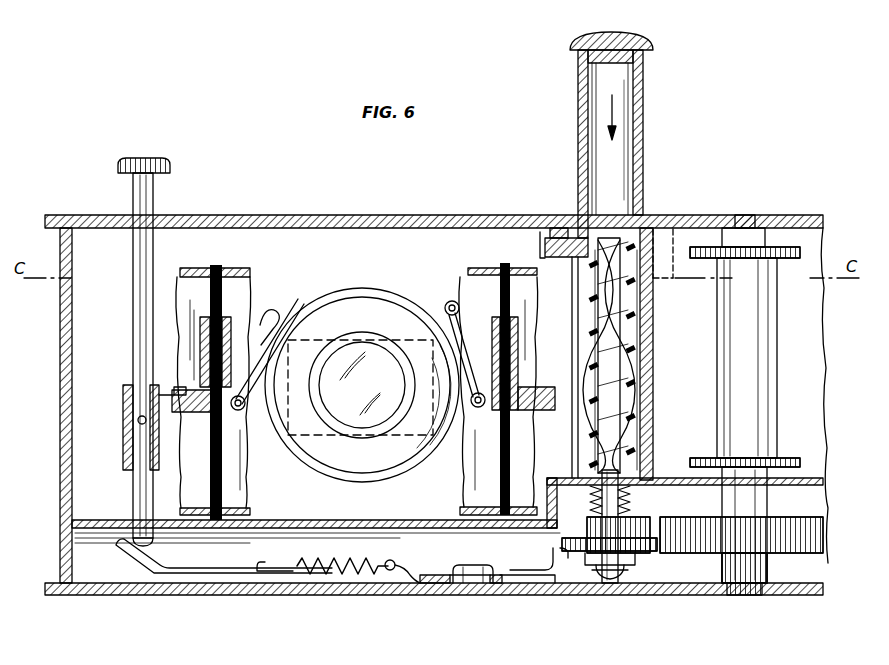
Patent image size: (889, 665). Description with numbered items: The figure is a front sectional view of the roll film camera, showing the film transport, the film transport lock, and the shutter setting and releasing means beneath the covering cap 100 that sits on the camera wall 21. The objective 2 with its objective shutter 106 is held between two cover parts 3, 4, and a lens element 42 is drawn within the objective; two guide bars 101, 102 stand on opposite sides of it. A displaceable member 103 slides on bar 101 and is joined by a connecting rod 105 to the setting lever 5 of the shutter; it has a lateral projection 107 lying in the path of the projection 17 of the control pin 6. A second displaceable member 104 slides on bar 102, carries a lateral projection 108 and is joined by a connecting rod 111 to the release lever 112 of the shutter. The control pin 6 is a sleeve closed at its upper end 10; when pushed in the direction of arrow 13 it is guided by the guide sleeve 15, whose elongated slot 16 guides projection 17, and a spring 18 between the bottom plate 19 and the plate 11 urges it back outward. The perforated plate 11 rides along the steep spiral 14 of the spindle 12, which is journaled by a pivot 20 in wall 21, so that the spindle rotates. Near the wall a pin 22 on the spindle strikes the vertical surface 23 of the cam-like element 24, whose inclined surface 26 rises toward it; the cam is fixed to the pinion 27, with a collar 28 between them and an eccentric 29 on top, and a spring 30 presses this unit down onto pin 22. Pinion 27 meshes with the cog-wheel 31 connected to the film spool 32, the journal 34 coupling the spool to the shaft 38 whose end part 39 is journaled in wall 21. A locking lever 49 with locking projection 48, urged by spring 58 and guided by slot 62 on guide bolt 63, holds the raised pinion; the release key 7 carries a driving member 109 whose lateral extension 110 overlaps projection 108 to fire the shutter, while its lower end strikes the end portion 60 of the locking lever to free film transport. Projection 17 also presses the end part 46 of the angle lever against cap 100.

The covering cap 100 is at (812, 215).
The camera wall 21 is at (234, 595).
The release key 7 is at (153, 190).
The driving member 109 is at (122, 401).
The lateral extension 110 is at (163, 385).
The lateral projection 108 is at (198, 412).
The cover part 3 is at (245, 269).
The guide bar 102 is at (216, 265).
The objective shutter 106 is at (364, 298).
The lens 42 is at (330, 344).
The objective 2 is at (341, 423).
The displaceable member 104 is at (238, 412).
The connecting rod 111 is at (298, 308).
The release lever 112 is at (262, 308).
The setting lever 5 is at (445, 310).
The cover part 4 is at (479, 268).
The guide bar 101 is at (511, 302).
The connecting rod 105 is at (472, 330).
The displaceable member 103 is at (519, 353).
The lateral projection 107 is at (527, 385).
The control pin 6 is at (643, 151).
The upper end 10 is at (648, 40).
The arrow 13 is at (617, 112).
The plate 11 is at (646, 213).
The spindle 12 is at (590, 214).
The projection 17 is at (564, 258).
The end part 46 is at (547, 237).
The guide sleeve 15 is at (653, 338).
The elongated slot 16 is at (572, 438).
The bottom plate 19 is at (653, 460).
The steep spiral 14 is at (628, 315).
The spring 18 is at (630, 376).
The pivot 20 is at (612, 587).
The spring 30 is at (622, 505).
The eccentric 29 is at (590, 527).
The collar 28 is at (648, 555).
The cog-wheel 31 is at (823, 530).
The film spool 32 is at (775, 346).
The journal 34 is at (767, 487).
The shaft 38 is at (767, 570).
The end part 39 is at (743, 593).
The pin 22 is at (643, 584).
The vertical surface 23 is at (609, 583).
The cam-like element 24 is at (600, 573).
The inclined surface 26 is at (588, 562).
The pinion 27 is at (546, 548).
The locking projection 48 is at (553, 566).
The locking lever 49 is at (511, 583).
The guide bolt 63 is at (468, 565).
The slot 62 is at (450, 585).
The spring 58 is at (320, 560).
The end portion 60 is at (140, 562).